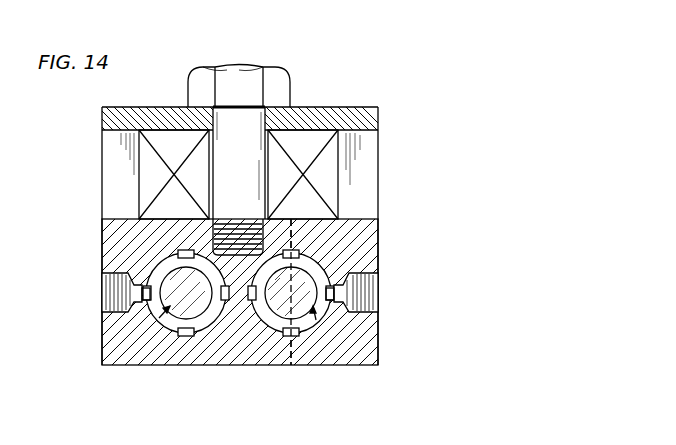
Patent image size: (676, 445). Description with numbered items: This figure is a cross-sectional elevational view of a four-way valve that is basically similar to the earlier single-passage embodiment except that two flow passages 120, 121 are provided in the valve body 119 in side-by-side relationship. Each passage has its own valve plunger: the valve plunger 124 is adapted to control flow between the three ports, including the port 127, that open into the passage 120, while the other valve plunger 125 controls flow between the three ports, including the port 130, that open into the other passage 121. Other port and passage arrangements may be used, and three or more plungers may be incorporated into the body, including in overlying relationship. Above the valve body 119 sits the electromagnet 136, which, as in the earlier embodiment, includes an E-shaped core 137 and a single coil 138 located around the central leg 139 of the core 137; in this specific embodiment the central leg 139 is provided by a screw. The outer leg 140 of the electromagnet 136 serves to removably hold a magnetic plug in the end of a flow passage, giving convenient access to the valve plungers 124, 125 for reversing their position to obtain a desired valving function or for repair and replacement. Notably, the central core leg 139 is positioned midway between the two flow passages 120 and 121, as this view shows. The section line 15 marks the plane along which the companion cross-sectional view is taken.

The section line 15— 15 is at (242, 219).
The valve body 119 is at (178, 357).
The flow passage 120 is at (312, 264).
The flow passage 121 is at (160, 262).
The valve plunger 124 is at (318, 322).
The valve plunger 125 is at (159, 320).
The port 127 is at (371, 300).
The port 130 is at (106, 292).
The electromagnet 136 is at (137, 151).
The E-shaped core 137 is at (309, 106).
The coil 138 is at (338, 177).
The central leg 139 is at (239, 172).
The outer leg 140 is at (108, 200).